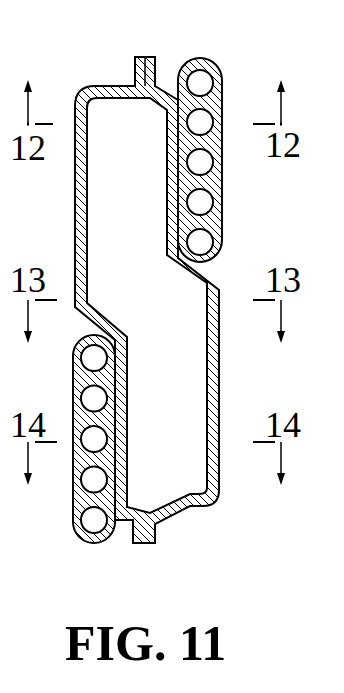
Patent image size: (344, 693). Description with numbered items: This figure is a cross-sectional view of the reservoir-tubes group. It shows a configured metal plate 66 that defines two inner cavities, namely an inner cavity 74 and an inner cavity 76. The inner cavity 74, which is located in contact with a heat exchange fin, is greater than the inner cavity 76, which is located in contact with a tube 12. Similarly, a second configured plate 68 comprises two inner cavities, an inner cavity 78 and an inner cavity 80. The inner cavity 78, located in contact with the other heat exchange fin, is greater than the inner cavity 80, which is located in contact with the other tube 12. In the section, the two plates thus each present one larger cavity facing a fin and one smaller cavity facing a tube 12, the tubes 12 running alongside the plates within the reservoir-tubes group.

The tube 12 is at (232, 70).
The configured metal plate 66 is at (97, 78).
The configured plate 68 is at (232, 405).
The inner cavity 74 is at (137, 180).
The inner cavity 76 is at (137, 487).
The inner cavity 78 is at (189, 412).
The inner cavity 80 is at (157, 137).